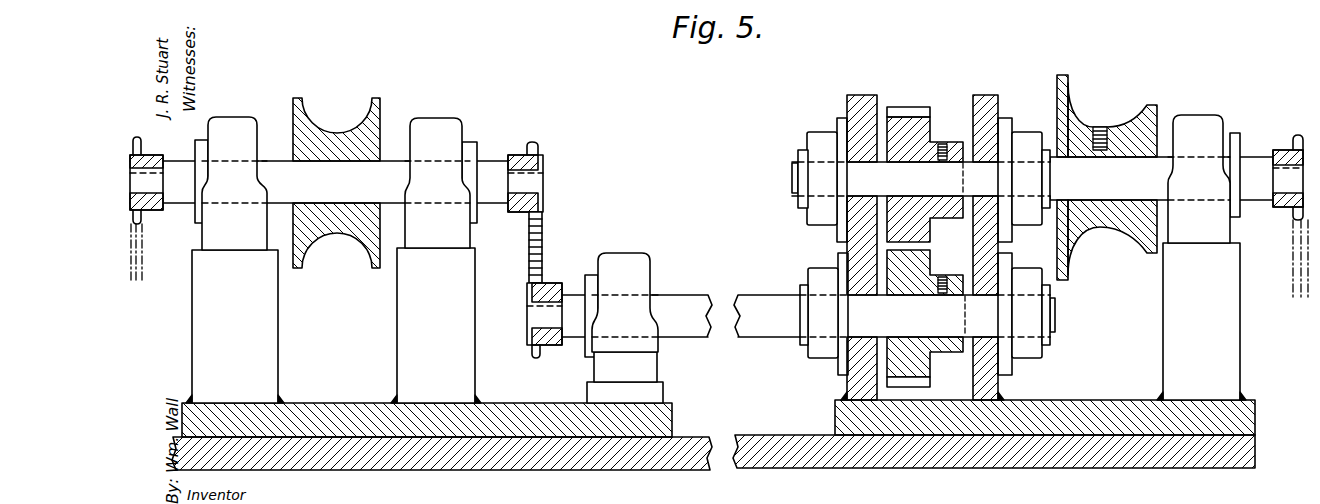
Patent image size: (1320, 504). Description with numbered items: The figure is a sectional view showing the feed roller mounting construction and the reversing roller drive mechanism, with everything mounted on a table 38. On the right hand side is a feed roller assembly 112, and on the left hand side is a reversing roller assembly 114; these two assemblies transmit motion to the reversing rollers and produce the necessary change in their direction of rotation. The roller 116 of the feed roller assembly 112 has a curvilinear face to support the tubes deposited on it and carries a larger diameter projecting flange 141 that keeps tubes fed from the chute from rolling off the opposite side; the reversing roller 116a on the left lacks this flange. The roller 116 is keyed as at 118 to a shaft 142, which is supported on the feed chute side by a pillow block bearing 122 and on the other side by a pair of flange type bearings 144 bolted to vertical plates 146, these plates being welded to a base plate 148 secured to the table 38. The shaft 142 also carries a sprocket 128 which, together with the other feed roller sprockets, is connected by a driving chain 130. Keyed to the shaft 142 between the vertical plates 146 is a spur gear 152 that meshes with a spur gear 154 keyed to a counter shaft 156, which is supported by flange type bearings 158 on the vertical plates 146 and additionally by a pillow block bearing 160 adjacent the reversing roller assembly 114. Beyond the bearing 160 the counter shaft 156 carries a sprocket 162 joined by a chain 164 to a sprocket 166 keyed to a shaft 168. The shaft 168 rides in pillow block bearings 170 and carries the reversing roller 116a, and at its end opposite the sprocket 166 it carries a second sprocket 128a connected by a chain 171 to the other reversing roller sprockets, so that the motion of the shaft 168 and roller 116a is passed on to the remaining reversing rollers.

The table 38 is at (355, 469).
The feed roller assembly 112 is at (840, 108).
The reversing roller assembly 114 is at (368, 224).
The roller 116 is at (1132, 108).
The reversing roller 116a is at (373, 95).
The key 118 is at (1090, 126).
The pillow block bearing 122 is at (1197, 122).
The sprocket 128 is at (1297, 137).
The second sprocket 128a is at (148, 218).
The driving chain 130 is at (1292, 258).
The projecting flange 141 is at (1066, 74).
The shaft 142 is at (1251, 155).
The flange type bearings 144 is at (815, 133).
The vertical plates 146 is at (838, 264).
The base plate 148 is at (1187, 425).
The spur gear 152 is at (913, 110).
The spur gear 154 is at (913, 388).
The counter shaft 156 is at (760, 293).
The flange type bearings 158 is at (820, 354).
The pillow block bearing 160 is at (636, 257).
The sprocket 162 is at (545, 282).
The chain 164 is at (542, 232).
The sprocket 166 is at (540, 158).
The shaft 168 is at (497, 196).
The pillow block bearings 170 is at (243, 126).
The chain 171 is at (148, 246).